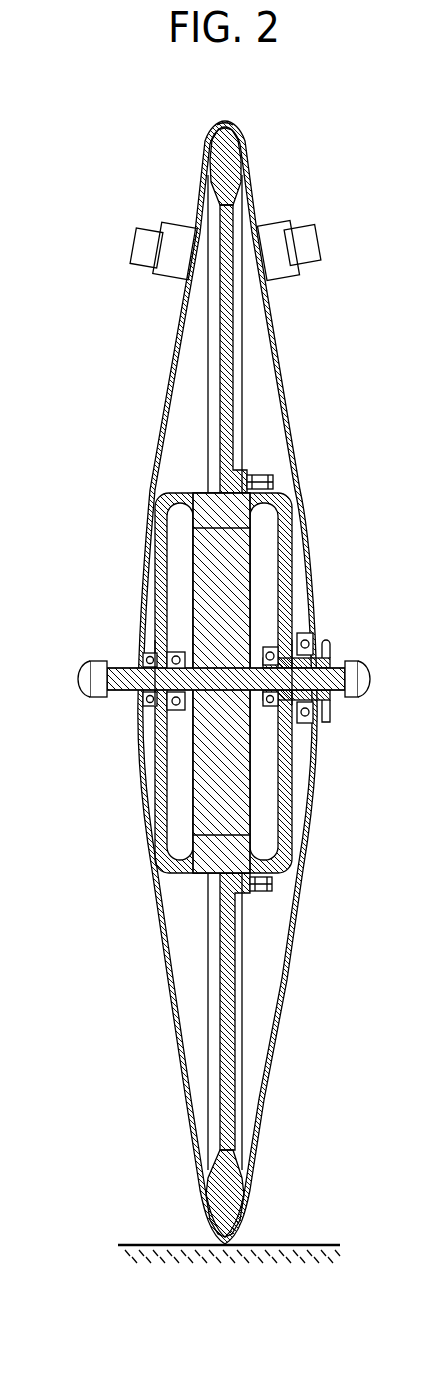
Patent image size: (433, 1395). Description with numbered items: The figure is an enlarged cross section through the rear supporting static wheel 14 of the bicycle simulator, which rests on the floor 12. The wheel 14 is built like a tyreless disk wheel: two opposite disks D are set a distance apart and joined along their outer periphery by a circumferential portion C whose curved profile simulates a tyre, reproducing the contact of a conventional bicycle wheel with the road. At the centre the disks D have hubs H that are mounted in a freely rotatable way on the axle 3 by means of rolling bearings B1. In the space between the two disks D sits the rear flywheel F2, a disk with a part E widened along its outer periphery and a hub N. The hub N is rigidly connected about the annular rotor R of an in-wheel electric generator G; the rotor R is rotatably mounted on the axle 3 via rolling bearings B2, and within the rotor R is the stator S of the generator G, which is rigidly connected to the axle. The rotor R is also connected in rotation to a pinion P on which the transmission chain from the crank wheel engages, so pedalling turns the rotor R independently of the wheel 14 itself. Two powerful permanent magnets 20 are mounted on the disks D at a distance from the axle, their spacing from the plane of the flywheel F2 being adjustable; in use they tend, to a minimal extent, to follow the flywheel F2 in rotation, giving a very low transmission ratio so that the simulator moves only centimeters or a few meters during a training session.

The rear supporting static wheel 14 is at (112, 136).
The circumferential portion C is at (229, 121).
The widened part E is at (240, 180).
The permanent magnets 20 is at (140, 243).
The disks D is at (170, 375).
The rear flywheel F2 is at (222, 362).
The hub N is at (235, 471).
The rolling bearings B2 is at (271, 648).
The hubs H is at (150, 648).
The pinion P is at (326, 642).
The rolling bearings B1 is at (141, 668).
The axle 3 is at (165, 685).
The stator S is at (240, 768).
The rotor R is at (252, 848).
The electric generator G is at (176, 878).
The floor 12 is at (288, 1245).